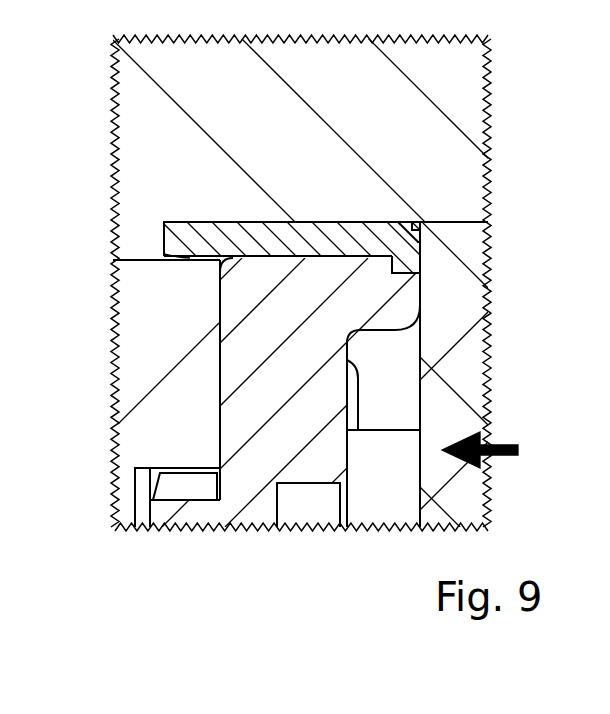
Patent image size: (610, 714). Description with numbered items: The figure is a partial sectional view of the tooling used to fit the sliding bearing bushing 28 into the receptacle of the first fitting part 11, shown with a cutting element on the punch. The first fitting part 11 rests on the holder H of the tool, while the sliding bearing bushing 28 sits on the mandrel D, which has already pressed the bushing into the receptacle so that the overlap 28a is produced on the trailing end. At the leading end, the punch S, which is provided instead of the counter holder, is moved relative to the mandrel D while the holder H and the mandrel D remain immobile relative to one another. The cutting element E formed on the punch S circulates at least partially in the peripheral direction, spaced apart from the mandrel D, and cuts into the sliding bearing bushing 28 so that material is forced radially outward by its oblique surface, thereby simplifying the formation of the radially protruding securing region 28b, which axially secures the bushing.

The sliding bearing bushing 28 is at (369, 215).
The overlap 28a is at (190, 260).
The securing region 28b is at (420, 265).
The first fitting part 11 is at (362, 348).
The mandrel D is at (172, 152).
The cutting element E is at (422, 244).
The punch S is at (452, 318).
The holder H is at (141, 382).